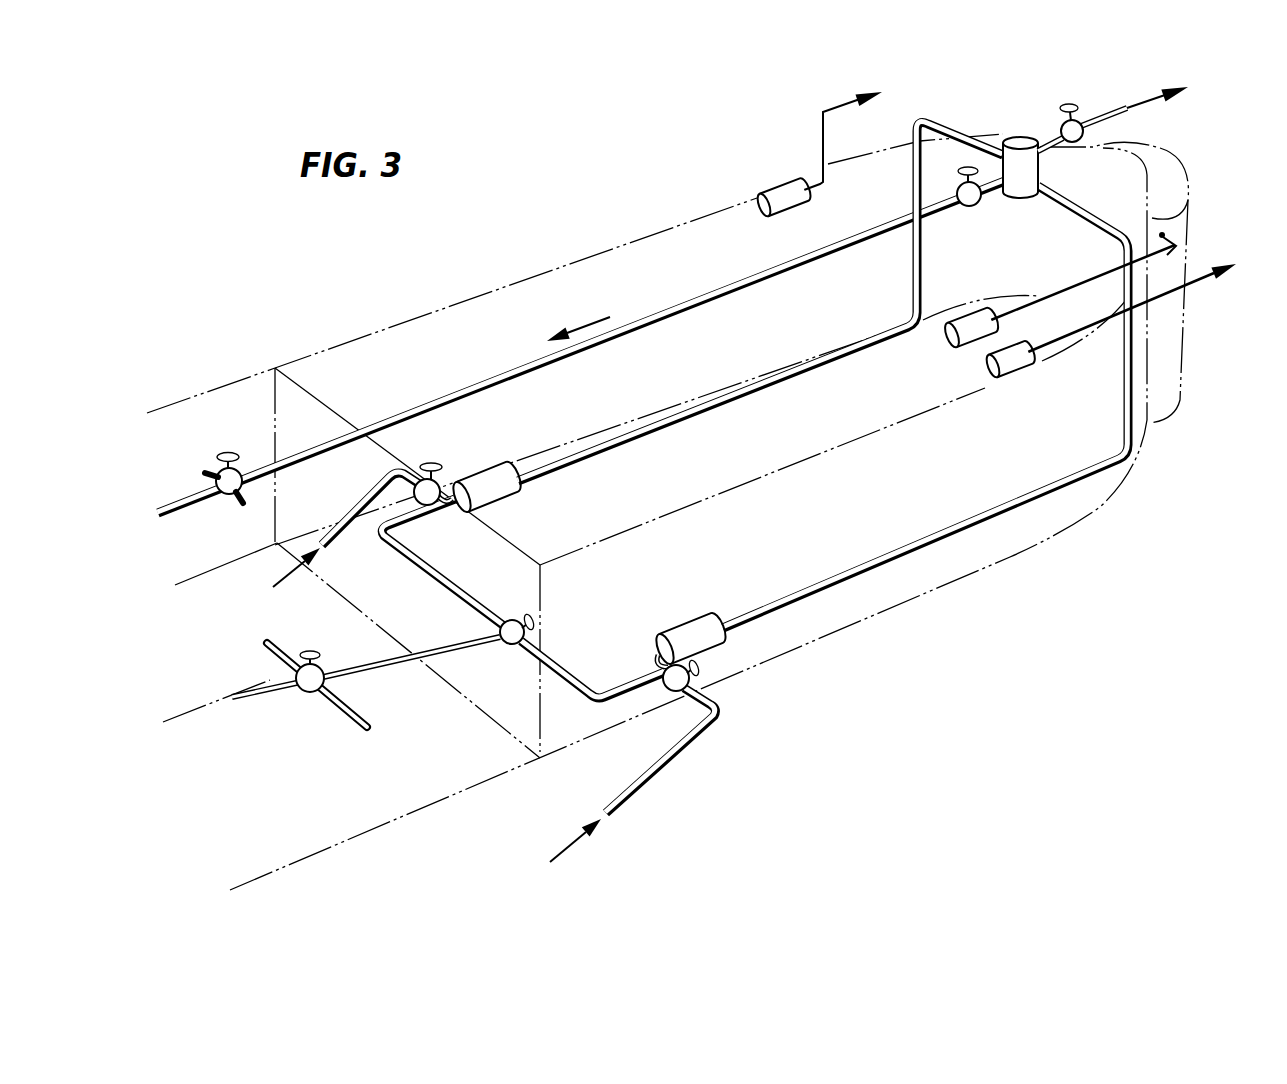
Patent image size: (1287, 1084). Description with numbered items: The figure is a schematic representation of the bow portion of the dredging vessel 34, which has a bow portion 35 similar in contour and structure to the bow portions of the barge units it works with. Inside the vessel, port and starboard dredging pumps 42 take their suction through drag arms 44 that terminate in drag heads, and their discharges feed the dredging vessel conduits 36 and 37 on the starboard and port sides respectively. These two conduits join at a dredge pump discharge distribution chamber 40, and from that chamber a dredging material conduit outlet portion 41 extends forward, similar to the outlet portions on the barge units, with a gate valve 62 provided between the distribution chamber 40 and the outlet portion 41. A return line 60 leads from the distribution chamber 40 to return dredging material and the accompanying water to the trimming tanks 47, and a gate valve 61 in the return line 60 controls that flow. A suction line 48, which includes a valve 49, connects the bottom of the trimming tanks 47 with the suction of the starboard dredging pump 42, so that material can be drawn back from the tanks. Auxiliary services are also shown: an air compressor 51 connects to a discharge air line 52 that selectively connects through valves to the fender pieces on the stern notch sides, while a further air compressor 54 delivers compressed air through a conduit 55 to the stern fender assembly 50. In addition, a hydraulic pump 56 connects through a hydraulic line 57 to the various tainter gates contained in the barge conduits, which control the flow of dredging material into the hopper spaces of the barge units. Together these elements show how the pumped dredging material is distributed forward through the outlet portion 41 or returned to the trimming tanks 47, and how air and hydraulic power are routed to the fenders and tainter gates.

The dredging vessel 34 is at (1108, 503).
The bow portion 35 is at (1158, 150).
The dredging vessel conduit 36 is at (1082, 200).
The dredging vessel conduit 37 is at (960, 172).
The dredge pump discharge distribution chamber 40 is at (1027, 140).
The dredging material conduit outlet portion 41 is at (1120, 101).
The dredging pump 42 is at (496, 478).
The drag arm 44 is at (706, 742).
The trimming tank 47 is at (435, 778).
The suction line 48 is at (566, 660).
The valve 49 is at (522, 622).
The stern fender assembly 50 is at (1198, 220).
The air compressor 51 is at (985, 370).
The discharge air line 52 is at (1088, 330).
The air compressor 54 is at (948, 341).
The conduit 55 is at (1084, 277).
The hydraulic pump 56 is at (763, 213).
The hydraulic line 57 is at (826, 146).
The return line 60 is at (821, 248).
The gate valve 61 is at (980, 204).
The gate valve 62 is at (1074, 103).